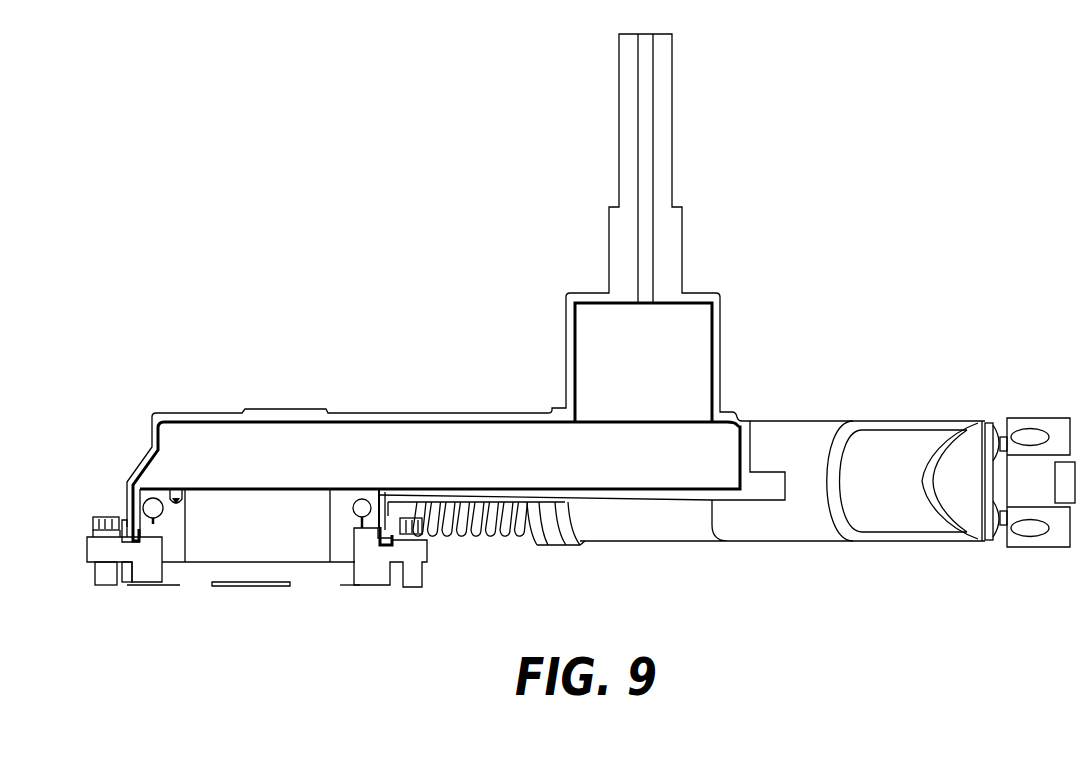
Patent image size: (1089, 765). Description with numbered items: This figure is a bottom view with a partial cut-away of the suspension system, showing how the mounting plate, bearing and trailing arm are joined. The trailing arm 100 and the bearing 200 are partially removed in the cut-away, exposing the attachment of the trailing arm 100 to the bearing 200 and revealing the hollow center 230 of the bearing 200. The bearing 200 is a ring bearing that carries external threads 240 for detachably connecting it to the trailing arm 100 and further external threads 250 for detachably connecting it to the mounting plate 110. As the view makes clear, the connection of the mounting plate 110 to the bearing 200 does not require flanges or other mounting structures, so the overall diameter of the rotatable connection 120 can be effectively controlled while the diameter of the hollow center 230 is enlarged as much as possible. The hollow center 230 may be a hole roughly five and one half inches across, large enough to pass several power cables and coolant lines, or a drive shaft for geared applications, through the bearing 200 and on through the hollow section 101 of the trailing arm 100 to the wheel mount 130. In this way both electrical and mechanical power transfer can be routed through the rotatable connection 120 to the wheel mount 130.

The trailing arm 100 is at (403, 413).
The hollow section 101 is at (440, 435).
The mounting plate 110 is at (148, 568).
The rotatable connection 120 is at (241, 352).
The wheel mount 130 is at (698, 352).
The bearing 200 is at (348, 540).
The hollow center 230 is at (243, 550).
The external threads 240 is at (380, 513).
The external threads 250 is at (355, 550).